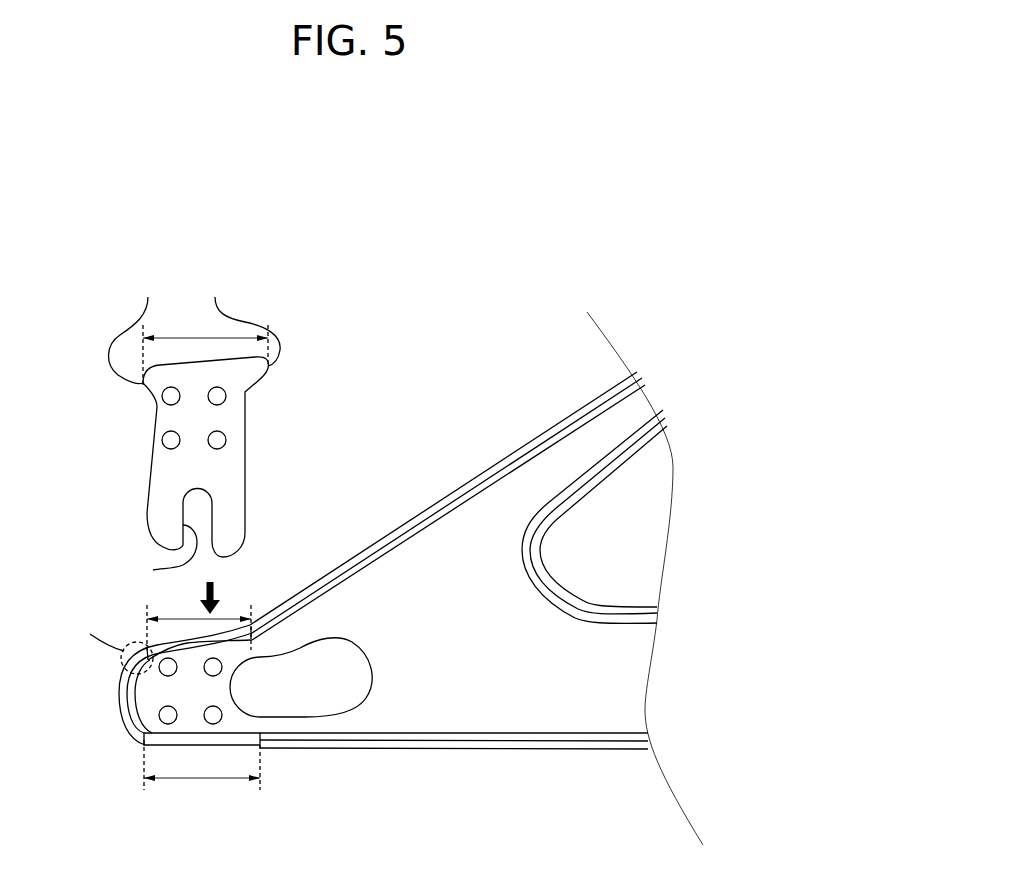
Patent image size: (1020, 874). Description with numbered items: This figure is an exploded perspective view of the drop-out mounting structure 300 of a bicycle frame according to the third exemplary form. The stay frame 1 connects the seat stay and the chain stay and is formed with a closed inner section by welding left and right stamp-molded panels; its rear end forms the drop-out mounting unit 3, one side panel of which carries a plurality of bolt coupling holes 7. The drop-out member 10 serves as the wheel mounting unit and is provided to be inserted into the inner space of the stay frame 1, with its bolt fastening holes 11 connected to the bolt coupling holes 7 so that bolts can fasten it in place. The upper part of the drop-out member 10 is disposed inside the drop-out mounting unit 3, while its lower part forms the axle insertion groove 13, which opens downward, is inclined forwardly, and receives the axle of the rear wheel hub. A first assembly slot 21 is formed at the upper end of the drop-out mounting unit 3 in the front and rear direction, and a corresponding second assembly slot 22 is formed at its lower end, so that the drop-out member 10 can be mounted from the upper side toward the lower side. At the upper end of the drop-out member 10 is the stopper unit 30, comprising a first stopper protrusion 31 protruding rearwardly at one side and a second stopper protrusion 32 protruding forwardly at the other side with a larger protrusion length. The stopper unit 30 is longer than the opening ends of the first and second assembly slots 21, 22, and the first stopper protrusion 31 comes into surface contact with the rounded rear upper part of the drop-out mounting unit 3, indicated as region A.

The drop-out mounting structure 300 is at (337, 222).
The stay frame 1 is at (499, 431).
The drop-out mounting unit 3 is at (103, 699).
The bolt coupling holes 7 is at (213, 724).
The drop-out member 10 is at (263, 428).
The bolt fastening holes 11 is at (171, 405).
The axle insertion groove 13 is at (153, 570).
The first assembly slot 21 is at (215, 638).
The second assembly slot 22 is at (193, 747).
The stopper unit 30 is at (135, 252).
The first stopper protrusion 31 is at (148, 297).
The second stopper protrusion 32 is at (215, 297).